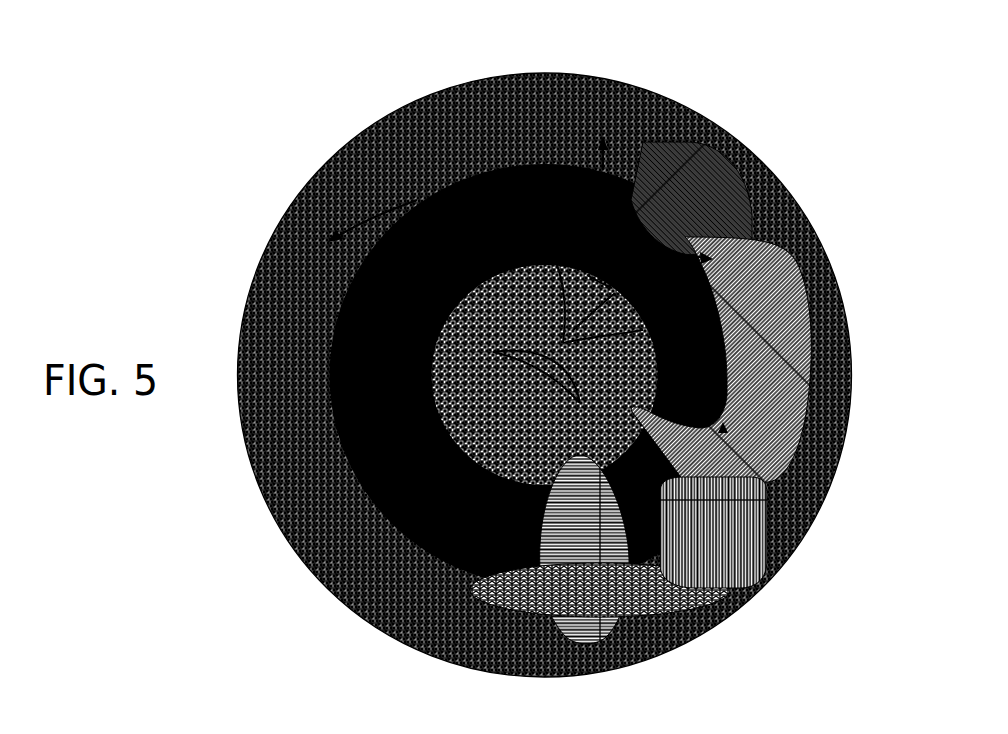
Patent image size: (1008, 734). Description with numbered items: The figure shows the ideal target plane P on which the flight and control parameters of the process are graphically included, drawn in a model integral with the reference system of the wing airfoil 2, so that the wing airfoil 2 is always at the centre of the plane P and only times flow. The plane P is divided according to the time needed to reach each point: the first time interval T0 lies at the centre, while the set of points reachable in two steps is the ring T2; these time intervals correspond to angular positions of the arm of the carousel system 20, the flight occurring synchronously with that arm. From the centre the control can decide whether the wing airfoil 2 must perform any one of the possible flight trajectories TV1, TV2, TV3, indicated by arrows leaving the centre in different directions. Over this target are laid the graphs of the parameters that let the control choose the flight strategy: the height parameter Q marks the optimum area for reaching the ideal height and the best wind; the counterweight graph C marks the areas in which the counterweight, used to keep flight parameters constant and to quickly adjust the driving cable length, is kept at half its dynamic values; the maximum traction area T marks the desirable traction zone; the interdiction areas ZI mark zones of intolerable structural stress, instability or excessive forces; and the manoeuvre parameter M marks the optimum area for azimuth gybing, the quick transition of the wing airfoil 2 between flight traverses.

The wing airfoil 2 is at (548, 363).
The carousel system 20 is at (230, 733).
The target plane P is at (533, 107).
The height parameter Q is at (681, 192).
The counterweight graph C is at (773, 318).
The manoeuvre parameter M is at (728, 540).
The maximum traction area T is at (605, 597).
The interdiction areas ZI is at (440, 565).
The first time interval T0 is at (545, 375).
The second-step time set T2 is at (545, 375).
The first flight trajectory TV1 is at (726, 351).
The second flight trajectory TV2 is at (585, 150).
The third flight trajectory TV3 is at (365, 220).